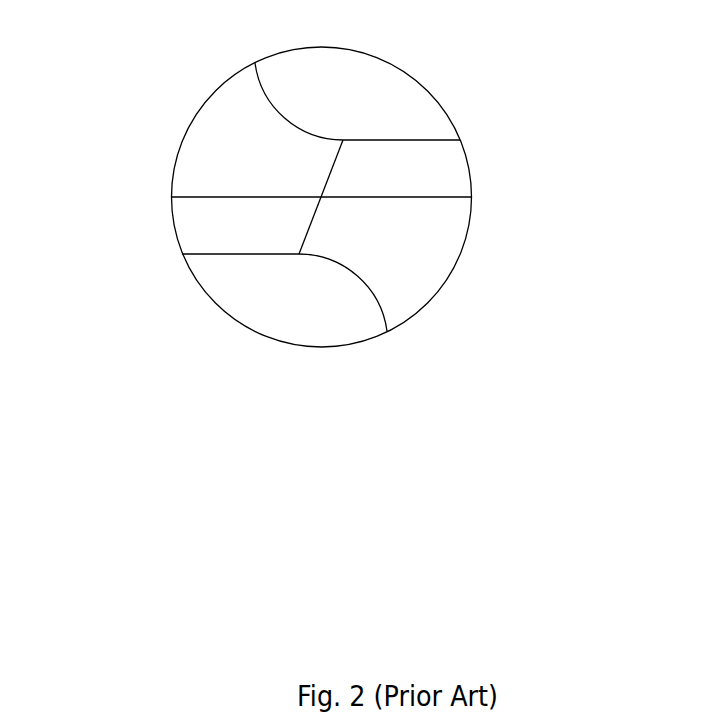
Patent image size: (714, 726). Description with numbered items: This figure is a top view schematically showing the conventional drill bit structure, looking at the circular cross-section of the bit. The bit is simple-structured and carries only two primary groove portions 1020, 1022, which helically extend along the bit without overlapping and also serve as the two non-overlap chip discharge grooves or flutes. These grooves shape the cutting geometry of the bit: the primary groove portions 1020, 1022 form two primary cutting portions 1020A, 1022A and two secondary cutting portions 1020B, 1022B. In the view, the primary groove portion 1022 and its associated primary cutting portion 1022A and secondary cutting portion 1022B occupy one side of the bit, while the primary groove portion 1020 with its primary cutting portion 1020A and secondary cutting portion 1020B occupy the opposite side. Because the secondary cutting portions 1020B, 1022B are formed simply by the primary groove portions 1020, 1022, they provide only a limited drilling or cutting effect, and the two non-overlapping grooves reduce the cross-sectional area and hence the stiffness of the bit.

The primary groove portion 1022 is at (323, 80).
The primary cutting portion 1022A is at (443, 168).
The secondary cutting portion 1022B is at (218, 158).
The primary groove portion 1020 is at (283, 303).
The primary cutting portion 1020A is at (207, 226).
The secondary cutting portion 1020B is at (402, 245).